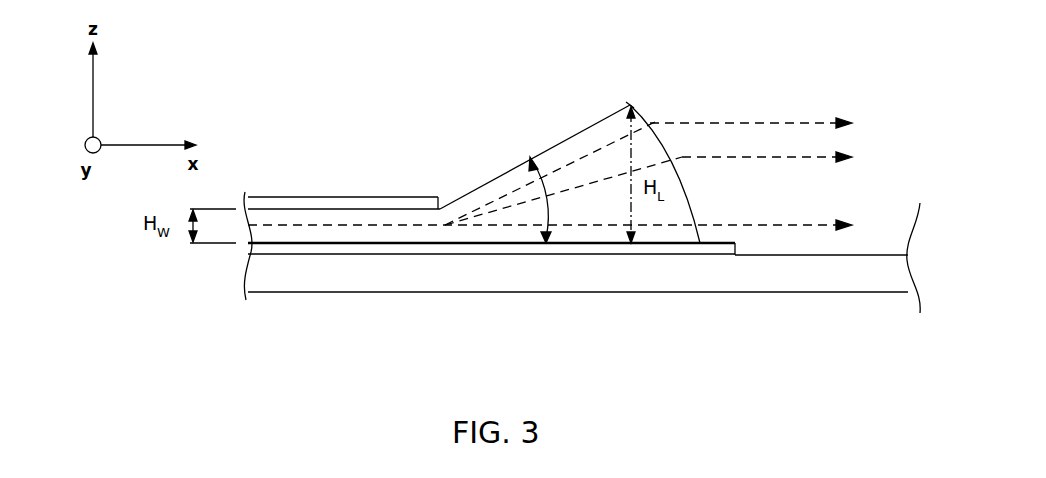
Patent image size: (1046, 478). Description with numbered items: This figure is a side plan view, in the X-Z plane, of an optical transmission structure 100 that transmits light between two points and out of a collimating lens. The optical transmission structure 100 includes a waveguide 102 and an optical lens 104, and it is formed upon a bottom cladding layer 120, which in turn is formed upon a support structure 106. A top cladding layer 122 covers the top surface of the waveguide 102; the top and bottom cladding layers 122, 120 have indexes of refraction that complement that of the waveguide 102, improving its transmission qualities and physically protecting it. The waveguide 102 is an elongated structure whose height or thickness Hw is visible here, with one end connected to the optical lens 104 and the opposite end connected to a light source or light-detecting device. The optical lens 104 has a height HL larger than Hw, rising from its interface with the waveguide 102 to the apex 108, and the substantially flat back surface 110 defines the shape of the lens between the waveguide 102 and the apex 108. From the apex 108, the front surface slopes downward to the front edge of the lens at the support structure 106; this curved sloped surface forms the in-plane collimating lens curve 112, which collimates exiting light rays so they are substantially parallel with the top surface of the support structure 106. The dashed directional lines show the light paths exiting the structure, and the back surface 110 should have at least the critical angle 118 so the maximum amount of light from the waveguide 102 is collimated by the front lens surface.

The optical transmission structure 100 is at (478, 132).
The waveguide 102 is at (280, 208).
The optical lens 104 is at (603, 120).
The support structure 106 is at (657, 278).
The apex 108 is at (633, 105).
The back surface 110 is at (543, 153).
The in-plane collimating lens curve 112 is at (671, 146).
The critical angle 118 is at (563, 215).
The bottom cladding layer 120 is at (736, 251).
The top cladding layer 122 is at (332, 197).